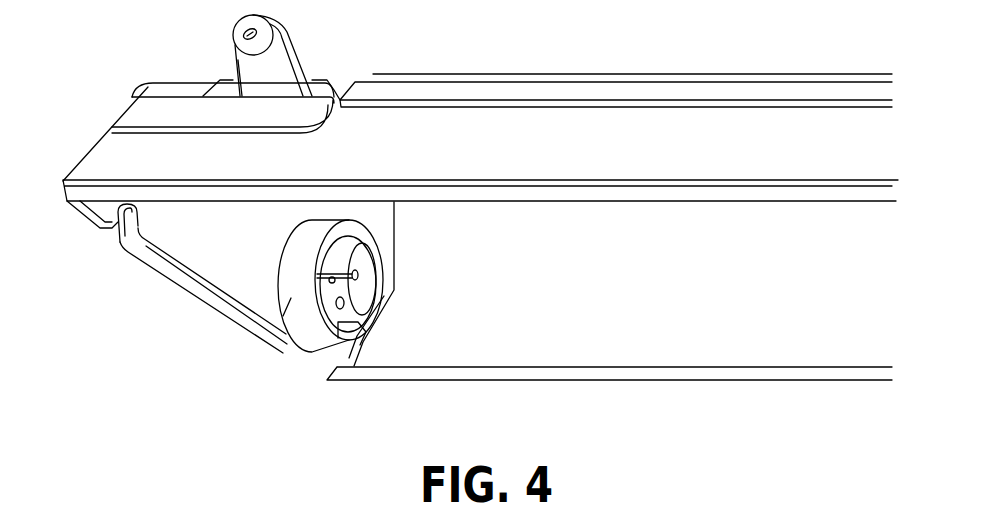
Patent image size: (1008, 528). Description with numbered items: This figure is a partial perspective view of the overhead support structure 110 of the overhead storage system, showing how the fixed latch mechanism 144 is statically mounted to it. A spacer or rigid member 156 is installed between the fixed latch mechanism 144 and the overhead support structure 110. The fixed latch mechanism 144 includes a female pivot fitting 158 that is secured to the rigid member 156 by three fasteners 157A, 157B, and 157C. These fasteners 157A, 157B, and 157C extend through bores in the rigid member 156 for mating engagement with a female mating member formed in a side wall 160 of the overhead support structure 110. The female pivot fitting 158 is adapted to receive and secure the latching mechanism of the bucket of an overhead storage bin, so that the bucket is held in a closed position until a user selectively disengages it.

The overhead support structure 110 is at (142, 112).
The fixed latch mechanism 144 is at (338, 336).
The rigid member 156 is at (278, 342).
The fastener 157A is at (353, 270).
The fastener 157B is at (358, 286).
The fastener 157C is at (343, 303).
The female pivot fitting 158 is at (365, 262).
The side wall 160 is at (170, 276).